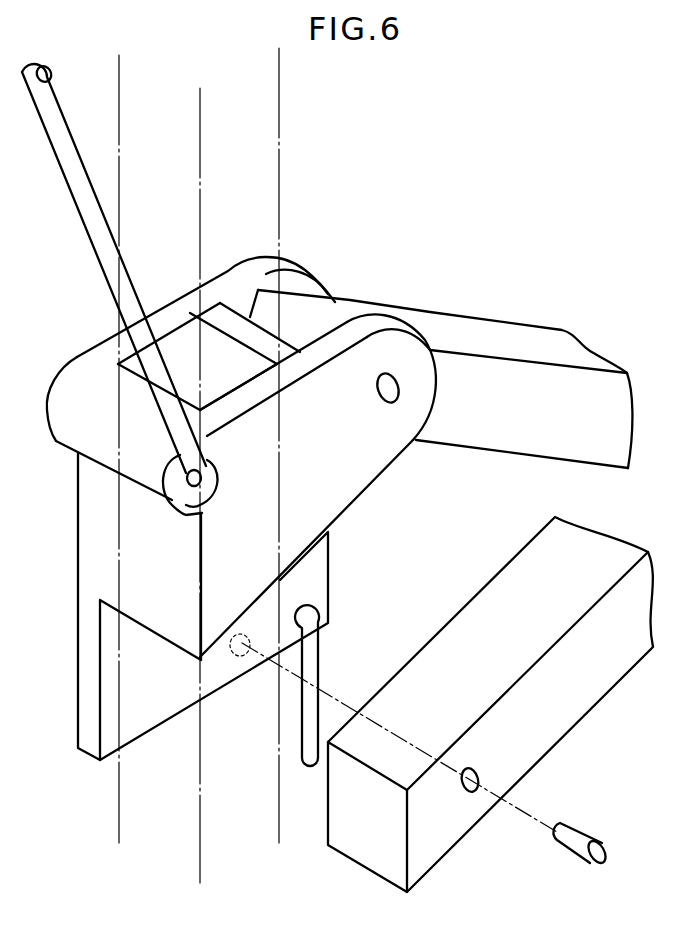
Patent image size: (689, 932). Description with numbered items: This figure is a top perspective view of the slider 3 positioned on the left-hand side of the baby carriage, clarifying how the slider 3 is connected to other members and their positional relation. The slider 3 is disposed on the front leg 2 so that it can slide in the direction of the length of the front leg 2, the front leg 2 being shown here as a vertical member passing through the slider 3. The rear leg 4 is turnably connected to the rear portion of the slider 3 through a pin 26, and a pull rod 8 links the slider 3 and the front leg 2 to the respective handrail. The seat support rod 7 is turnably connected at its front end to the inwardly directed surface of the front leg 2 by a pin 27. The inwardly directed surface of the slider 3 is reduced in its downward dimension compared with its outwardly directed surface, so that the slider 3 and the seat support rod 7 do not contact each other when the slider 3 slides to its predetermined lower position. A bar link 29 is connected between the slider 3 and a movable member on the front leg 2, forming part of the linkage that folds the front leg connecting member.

The front leg 2 is at (127, 790).
The slider 3 is at (88, 484).
The rear leg 4 is at (442, 323).
The seat support rod 7 is at (590, 697).
The pull rod 8 is at (98, 236).
The pin 26 is at (389, 396).
The pin 27 is at (563, 840).
The bar link 29 is at (314, 665).